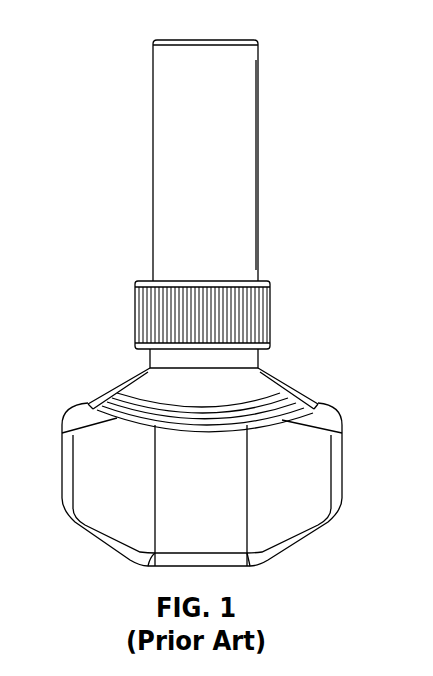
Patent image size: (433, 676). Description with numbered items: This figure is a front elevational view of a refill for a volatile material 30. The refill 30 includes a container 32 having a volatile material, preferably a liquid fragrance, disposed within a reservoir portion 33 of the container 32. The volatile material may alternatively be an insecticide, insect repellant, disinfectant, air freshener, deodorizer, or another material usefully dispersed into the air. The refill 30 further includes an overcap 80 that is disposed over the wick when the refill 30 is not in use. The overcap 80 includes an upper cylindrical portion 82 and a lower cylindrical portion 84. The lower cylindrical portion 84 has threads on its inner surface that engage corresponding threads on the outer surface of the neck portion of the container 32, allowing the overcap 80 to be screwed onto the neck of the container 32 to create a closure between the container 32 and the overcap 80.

The refill for a volatile material 30 is at (92, 45).
The overcap 80 is at (247, 97).
The upper cylindrical portion 82 is at (245, 193).
The lower cylindrical portion 84 is at (272, 318).
The container 32 is at (323, 418).
The reservoir portion 33 is at (342, 466).